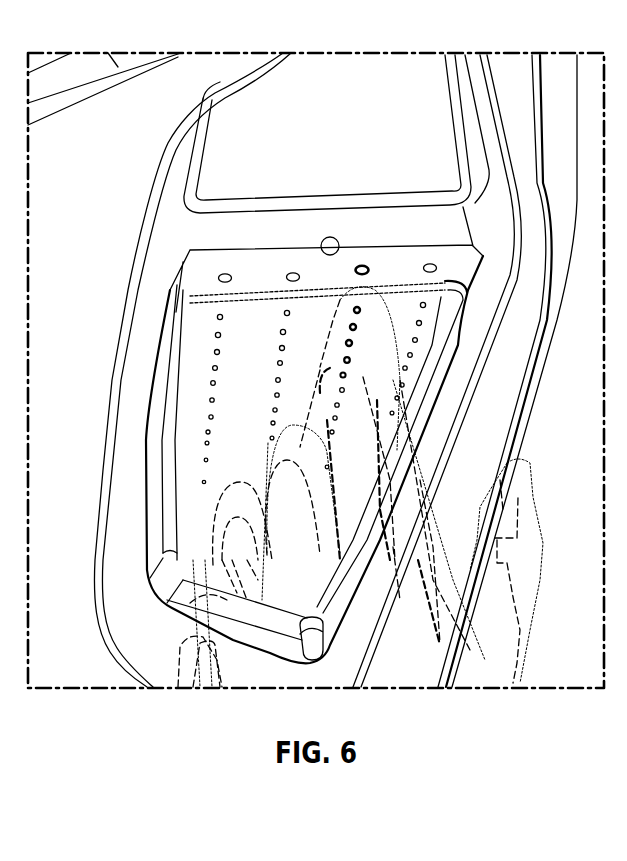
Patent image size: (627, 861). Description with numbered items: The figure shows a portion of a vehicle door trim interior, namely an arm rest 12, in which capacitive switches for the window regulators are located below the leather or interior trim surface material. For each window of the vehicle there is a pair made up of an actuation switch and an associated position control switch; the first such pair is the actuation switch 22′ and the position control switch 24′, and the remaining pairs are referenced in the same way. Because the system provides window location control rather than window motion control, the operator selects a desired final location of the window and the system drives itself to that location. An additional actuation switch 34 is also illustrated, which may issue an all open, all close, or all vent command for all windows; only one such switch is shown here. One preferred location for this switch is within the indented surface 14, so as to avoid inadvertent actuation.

The arm rest 12 is at (320, 25).
The indented surface 14 is at (450, 222).
The additional actuation switch 34 is at (330, 237).
The first actuation switch 22′ is at (223, 274).
The first position control switch 24′ is at (215, 354).